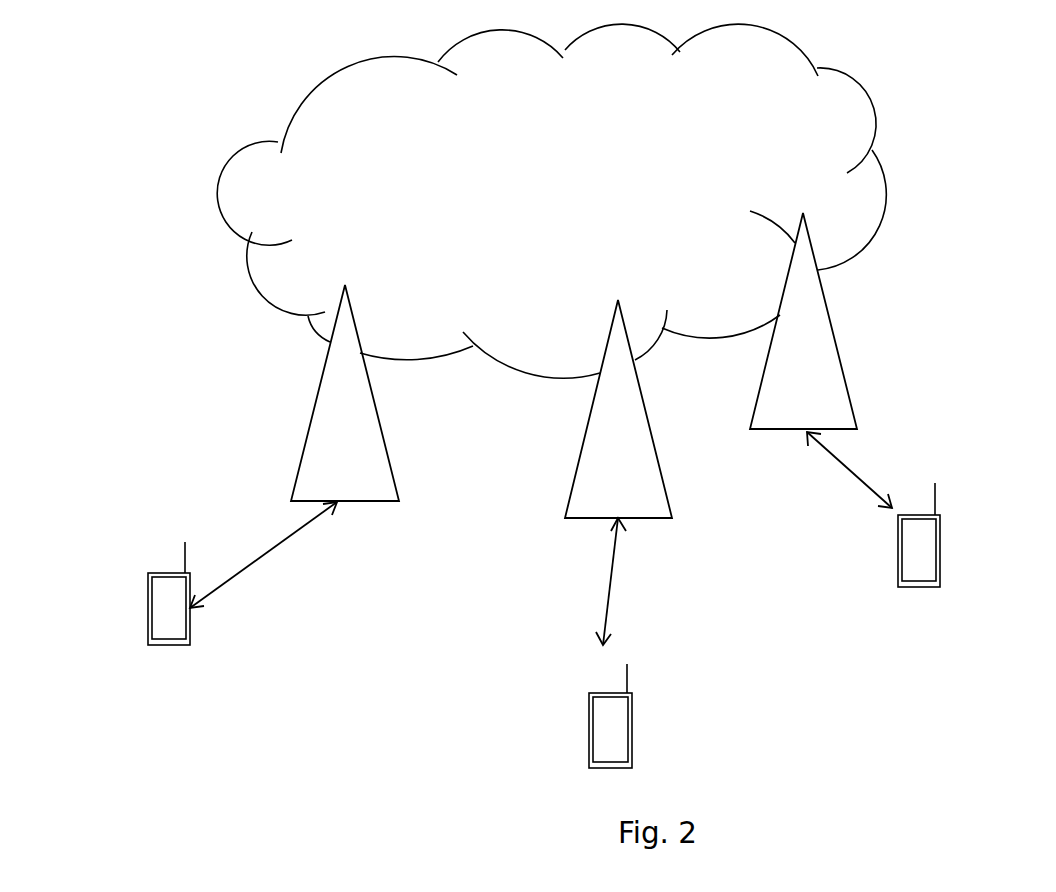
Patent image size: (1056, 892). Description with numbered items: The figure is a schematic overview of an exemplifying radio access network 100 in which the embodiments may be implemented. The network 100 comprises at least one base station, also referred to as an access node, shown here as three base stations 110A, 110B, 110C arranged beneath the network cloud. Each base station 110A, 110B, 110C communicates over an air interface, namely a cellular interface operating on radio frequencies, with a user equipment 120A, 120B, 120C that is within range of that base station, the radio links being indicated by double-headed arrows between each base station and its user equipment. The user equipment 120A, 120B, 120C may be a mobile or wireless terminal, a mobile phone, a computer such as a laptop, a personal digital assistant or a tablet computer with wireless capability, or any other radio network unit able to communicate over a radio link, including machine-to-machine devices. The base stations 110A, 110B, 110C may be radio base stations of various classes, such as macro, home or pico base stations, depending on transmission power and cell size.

The radio access network 100 is at (902, 113).
The base station 110A is at (307, 393).
The base station 110B is at (582, 409).
The base station 110C is at (839, 321).
The user equipment 120A is at (124, 593).
The user equipment 120B is at (566, 716).
The user equipment 120C is at (954, 535).